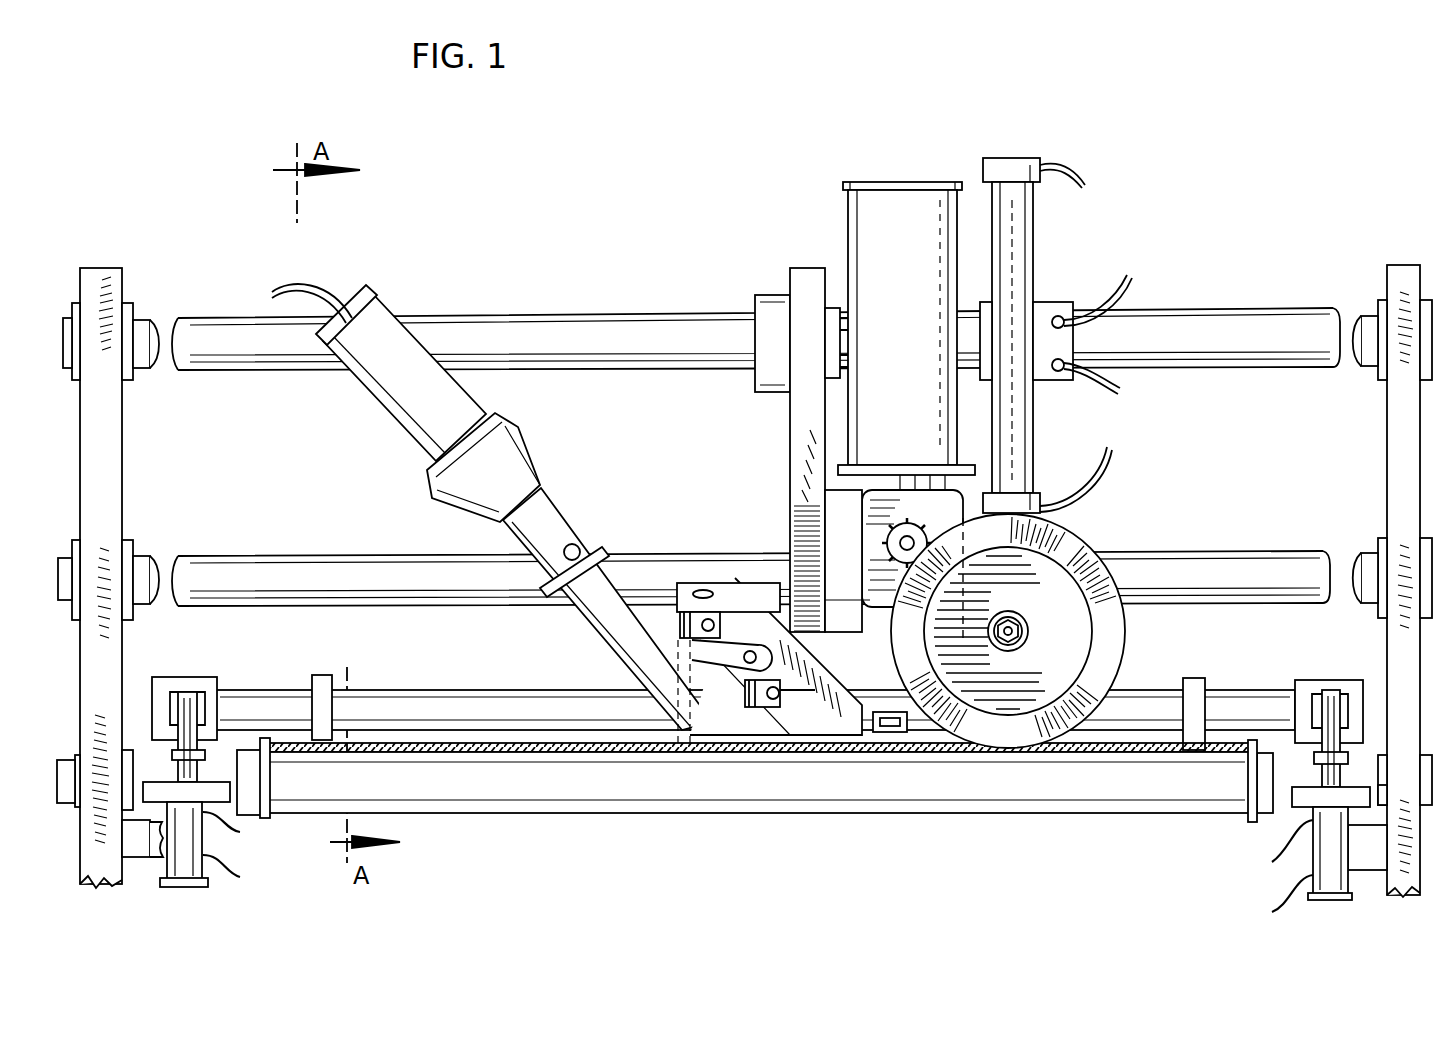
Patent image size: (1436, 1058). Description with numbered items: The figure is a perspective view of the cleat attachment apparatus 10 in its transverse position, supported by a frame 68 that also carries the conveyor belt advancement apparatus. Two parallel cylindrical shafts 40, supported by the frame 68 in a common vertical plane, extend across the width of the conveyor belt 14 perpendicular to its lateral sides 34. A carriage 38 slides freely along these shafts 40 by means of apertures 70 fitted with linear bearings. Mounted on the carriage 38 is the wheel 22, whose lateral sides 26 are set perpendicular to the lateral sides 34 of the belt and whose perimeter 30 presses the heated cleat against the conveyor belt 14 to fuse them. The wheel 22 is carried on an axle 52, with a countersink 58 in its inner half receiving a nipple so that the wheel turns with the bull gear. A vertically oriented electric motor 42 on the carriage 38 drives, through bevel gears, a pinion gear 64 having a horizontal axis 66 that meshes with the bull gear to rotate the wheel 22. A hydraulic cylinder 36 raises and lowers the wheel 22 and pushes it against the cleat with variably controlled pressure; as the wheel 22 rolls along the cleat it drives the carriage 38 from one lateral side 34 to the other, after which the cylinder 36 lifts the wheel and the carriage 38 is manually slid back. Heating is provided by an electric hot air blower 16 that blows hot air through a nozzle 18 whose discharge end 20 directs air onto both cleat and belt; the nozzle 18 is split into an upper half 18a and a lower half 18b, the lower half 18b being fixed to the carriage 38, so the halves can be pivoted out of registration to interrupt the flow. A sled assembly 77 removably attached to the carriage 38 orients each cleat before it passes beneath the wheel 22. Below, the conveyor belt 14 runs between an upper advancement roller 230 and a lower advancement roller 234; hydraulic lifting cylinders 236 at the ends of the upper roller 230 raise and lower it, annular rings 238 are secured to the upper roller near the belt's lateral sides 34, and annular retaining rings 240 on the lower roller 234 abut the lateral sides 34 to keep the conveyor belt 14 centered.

The cleat attachment apparatus 10 is at (524, 298).
The conveyor belt 14 is at (1092, 772).
The electric hot air blower 16 is at (397, 352).
The nozzle 18 is at (632, 673).
The upper half of nozzle 18a is at (562, 512).
The lower half of nozzle 18b is at (735, 745).
The discharge end 20 is at (958, 760).
The wheel 22 is at (1013, 748).
The lateral sides of wheel 26 is at (1008, 631).
The perimeter of wheel 30 is at (1065, 548).
The lateral sides of conveyor belt 34 is at (270, 798).
The hydraulic cylinder 36 is at (1033, 228).
The carriage 38 is at (802, 295).
The parallel shafts 40 is at (245, 366).
The electric motor 42 is at (857, 212).
The axle 52 is at (1008, 631).
The countersink 58 is at (1028, 633).
The pinion gear 64 is at (905, 543).
The horizontal axis 66 is at (910, 543).
The frame 68 is at (122, 290).
The apertures 70 is at (744, 343).
The sled assembly 77 is at (700, 583).
The upper advancement roller 230 is at (418, 702).
The lower advancement roller 234 is at (243, 745).
The hydraulic lifting cylinders 236 is at (1332, 888).
The annular rings 238 is at (322, 676).
The annular retaining rings 240 is at (1250, 828).